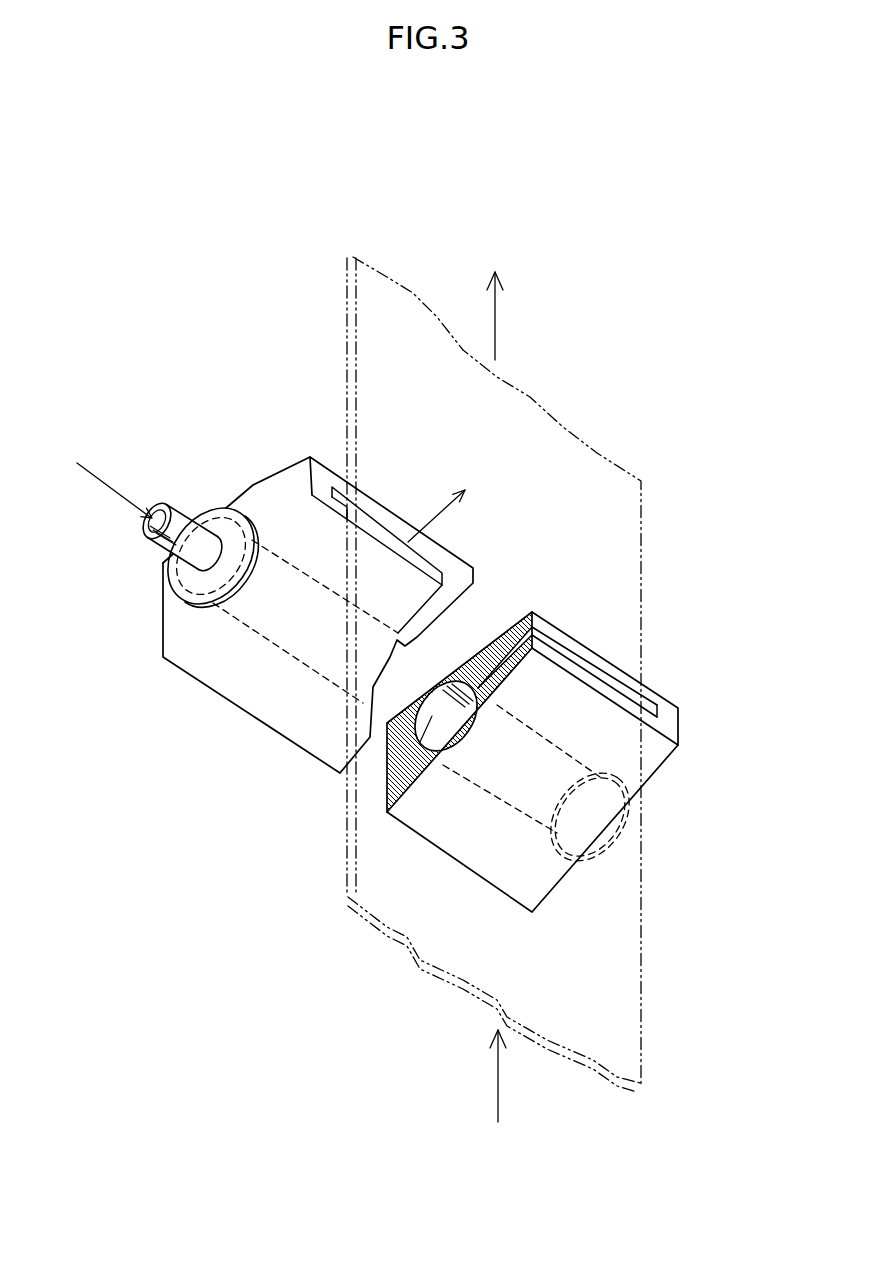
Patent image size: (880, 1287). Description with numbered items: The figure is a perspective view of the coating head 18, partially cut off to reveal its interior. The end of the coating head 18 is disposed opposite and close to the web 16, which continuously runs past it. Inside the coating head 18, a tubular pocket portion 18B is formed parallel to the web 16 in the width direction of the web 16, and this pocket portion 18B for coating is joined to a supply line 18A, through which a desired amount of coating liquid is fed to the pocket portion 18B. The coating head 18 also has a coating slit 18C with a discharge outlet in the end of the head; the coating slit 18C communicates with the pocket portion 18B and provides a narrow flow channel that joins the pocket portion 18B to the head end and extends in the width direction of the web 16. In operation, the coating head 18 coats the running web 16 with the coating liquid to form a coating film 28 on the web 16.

The web 16 is at (624, 605).
The coating film 28 is at (355, 317).
The coating head 18 is at (258, 470).
The supply line 18A is at (182, 525).
The pocket portion 18B is at (302, 657).
The coating slit 18C is at (553, 643).